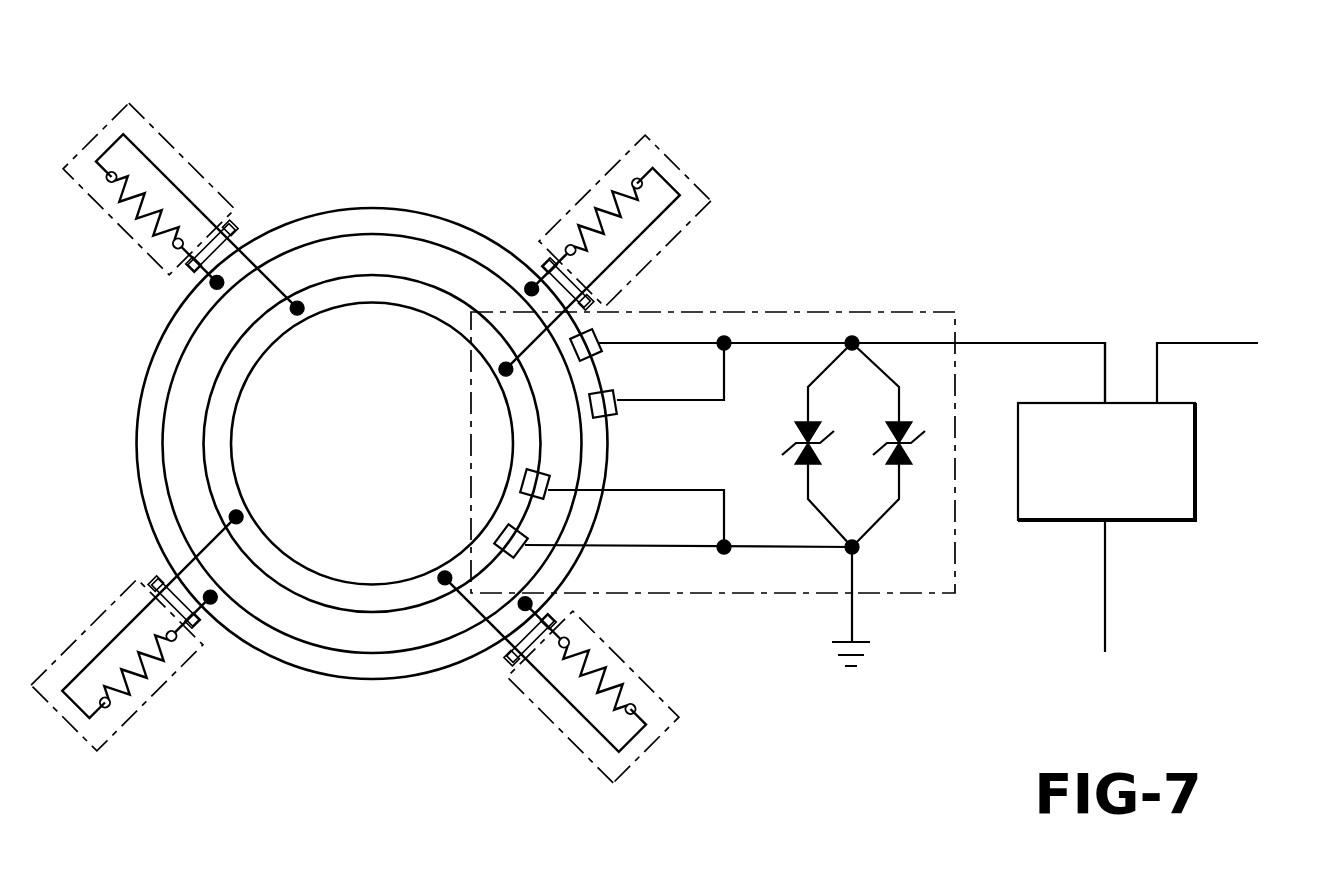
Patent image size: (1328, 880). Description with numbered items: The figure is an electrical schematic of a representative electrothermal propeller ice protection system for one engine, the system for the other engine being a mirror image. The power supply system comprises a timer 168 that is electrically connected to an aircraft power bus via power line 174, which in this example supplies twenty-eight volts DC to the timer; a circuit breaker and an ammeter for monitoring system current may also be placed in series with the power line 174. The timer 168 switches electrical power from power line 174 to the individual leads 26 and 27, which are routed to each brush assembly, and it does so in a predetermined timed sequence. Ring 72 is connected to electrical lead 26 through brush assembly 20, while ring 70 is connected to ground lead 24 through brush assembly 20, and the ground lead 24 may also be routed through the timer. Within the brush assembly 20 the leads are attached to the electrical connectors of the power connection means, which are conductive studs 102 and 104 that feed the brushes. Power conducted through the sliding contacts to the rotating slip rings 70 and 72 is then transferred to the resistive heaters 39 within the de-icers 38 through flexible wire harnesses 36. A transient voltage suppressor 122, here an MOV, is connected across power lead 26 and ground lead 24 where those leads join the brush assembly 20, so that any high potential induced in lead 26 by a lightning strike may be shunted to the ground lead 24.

The brush assembly 20 is at (788, 427).
The ground lead 24 is at (851, 610).
The lead 26 is at (1068, 343).
The lead 27 is at (1210, 343).
The flexible wire harness 36 is at (232, 232).
The de-icer 38 is at (195, 227).
The resistive heater 39 is at (125, 208).
The slip ring 70 is at (337, 278).
The slip ring 72 is at (445, 210).
The conductive stud 102 is at (852, 550).
The conductive stud 104 is at (852, 340).
The transient voltage suppressor 122 is at (912, 424).
The timer 168 is at (1042, 508).
The power line 174 is at (1105, 590).